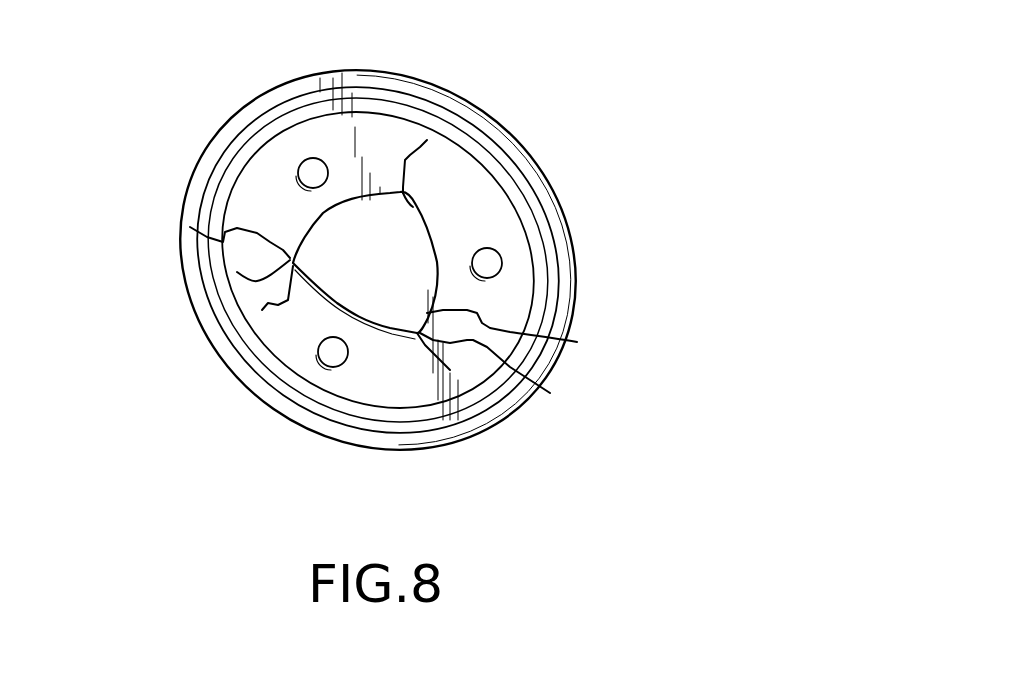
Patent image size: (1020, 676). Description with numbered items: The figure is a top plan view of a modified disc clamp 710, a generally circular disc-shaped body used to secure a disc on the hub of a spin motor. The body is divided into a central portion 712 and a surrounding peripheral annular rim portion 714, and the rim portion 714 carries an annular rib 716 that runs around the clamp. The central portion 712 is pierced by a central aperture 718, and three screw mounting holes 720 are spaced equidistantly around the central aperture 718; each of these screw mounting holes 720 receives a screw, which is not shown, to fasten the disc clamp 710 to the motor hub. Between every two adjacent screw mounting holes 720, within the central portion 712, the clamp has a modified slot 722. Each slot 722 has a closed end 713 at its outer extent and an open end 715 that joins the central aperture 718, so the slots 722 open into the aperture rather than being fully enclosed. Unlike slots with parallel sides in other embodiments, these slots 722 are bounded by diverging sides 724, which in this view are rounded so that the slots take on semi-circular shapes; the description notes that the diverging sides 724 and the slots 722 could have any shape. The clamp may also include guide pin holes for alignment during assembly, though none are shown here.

The disc clamp 710 is at (691, 134).
The central portion 712 is at (448, 170).
The closed end 713 is at (475, 340).
The peripheral annular rim portion 714 is at (575, 203).
The open end 715 is at (560, 337).
The annular rib 716 is at (570, 305).
The central aperture 718 is at (407, 240).
The screw mounting holes 720 is at (302, 167).
The slot 722 is at (427, 140).
The diverging sides 724 is at (190, 227).